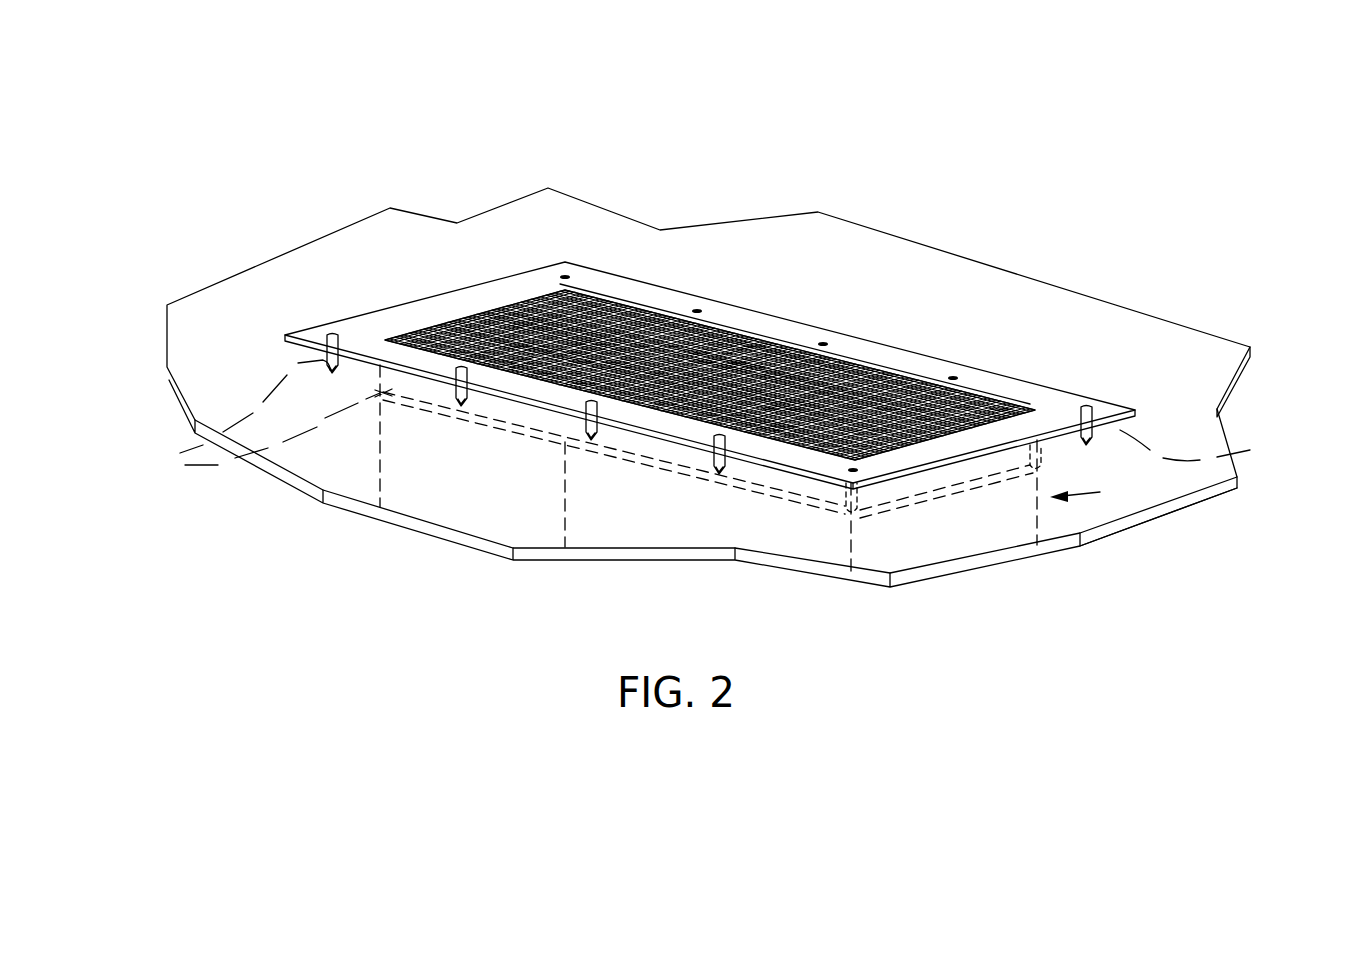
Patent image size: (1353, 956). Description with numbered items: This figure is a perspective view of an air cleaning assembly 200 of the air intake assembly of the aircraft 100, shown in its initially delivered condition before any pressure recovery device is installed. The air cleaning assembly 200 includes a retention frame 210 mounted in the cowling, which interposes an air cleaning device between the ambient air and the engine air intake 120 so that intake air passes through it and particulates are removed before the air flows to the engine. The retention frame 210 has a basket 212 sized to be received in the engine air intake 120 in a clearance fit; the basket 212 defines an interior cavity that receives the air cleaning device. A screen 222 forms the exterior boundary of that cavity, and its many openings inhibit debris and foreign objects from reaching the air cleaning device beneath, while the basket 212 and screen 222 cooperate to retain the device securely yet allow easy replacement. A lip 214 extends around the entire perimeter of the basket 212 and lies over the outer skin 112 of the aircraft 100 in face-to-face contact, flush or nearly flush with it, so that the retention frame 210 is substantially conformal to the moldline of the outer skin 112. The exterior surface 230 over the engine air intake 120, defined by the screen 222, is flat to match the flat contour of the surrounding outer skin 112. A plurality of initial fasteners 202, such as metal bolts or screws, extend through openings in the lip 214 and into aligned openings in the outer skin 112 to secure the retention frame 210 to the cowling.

The aircraft 100 is at (315, 122).
The outer skin 112 is at (167, 340).
The engine air intake 120 is at (1127, 492).
The air cleaning assembly 200 is at (407, 230).
The initial fasteners 202 is at (170, 466).
The retention frame 210 is at (1032, 393).
The basket 212 is at (720, 497).
The lip 214 is at (1132, 412).
The screen 222 is at (710, 293).
The exterior surface 230 is at (530, 312).